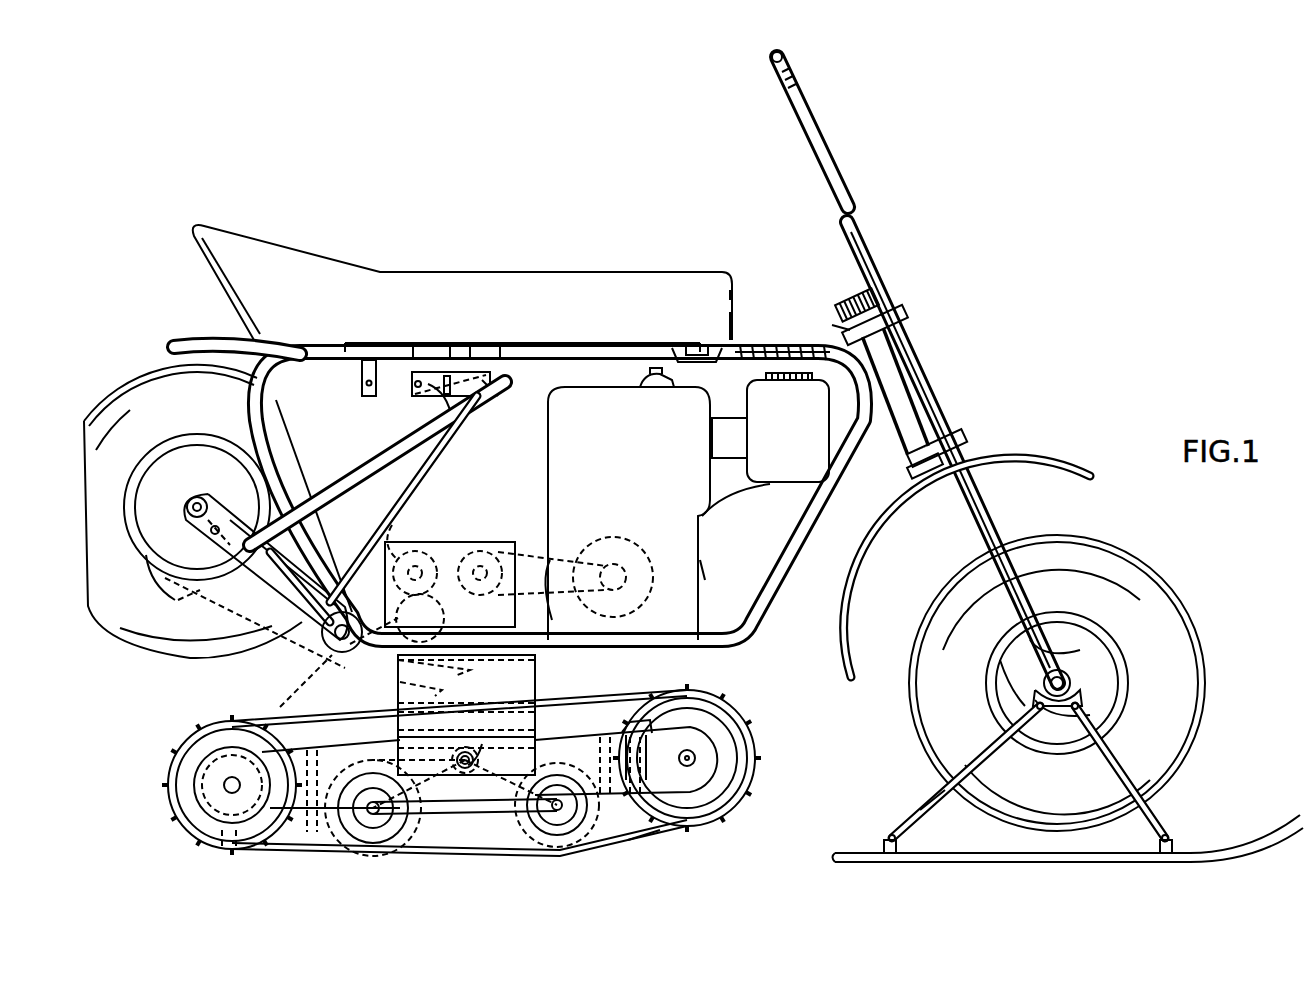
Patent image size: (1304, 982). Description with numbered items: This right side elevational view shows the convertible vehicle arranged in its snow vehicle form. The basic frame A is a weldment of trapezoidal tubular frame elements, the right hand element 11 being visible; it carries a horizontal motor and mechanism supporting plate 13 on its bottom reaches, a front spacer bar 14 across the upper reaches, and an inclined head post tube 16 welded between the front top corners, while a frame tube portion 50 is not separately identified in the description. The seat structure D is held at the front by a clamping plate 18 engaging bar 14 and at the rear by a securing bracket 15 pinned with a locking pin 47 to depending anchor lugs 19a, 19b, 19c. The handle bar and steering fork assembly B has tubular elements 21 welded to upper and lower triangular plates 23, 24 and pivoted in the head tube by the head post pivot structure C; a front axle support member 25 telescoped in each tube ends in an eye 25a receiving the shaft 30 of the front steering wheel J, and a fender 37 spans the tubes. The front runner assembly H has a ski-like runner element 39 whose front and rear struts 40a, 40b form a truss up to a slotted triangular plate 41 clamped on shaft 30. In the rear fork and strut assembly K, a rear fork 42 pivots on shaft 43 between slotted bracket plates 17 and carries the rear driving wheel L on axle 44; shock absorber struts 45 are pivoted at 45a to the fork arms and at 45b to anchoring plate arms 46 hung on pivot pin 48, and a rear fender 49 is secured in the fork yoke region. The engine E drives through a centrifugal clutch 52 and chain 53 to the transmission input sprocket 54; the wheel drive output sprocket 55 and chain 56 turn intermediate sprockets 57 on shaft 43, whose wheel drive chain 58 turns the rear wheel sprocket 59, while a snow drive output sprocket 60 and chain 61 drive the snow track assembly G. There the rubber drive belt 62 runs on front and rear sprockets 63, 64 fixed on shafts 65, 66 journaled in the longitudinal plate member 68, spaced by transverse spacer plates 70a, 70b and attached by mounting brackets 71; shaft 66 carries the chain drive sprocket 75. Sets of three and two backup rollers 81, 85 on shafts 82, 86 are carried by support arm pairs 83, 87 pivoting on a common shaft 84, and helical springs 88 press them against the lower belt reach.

The tubular frame element 11 is at (762, 614).
The motor and mechanism supporting plate 13 is at (715, 577).
The front spacer bar 14 is at (702, 345).
The rear securing bracket 15 is at (370, 341).
The head post tube 16 is at (892, 332).
The bracket plates 17 is at (339, 662).
The clamping plate 18 is at (682, 350).
The anchor lug 19a is at (378, 390).
The anchor lug 19b is at (410, 338).
The anchor lug 19c is at (488, 342).
The tubular element 21 is at (850, 203).
The upper triangular plate 23 is at (900, 303).
The lower triangular plate 24 is at (960, 441).
The front axle support member 25 is at (1054, 643).
The front wheel shaft receiving eye 25a is at (1094, 653).
The shaft 30 is at (1074, 687).
The fender 37 is at (1046, 479).
The ski-like runner element 39 is at (937, 858).
The front strut 40a is at (1120, 779).
The rear strut 40b is at (986, 755).
The triangular plate 41 is at (1084, 703).
The rear fork 42 is at (264, 590).
The shaft 43 is at (320, 642).
The axle 44 is at (204, 500).
The shock absorber strut unit 45 is at (390, 473).
The lower strut pivot 45a is at (210, 540).
The upper strut pivot 45b is at (502, 390).
The anchoring plate arm 46 is at (452, 420).
The locking pin 47 is at (484, 362).
The pivot pin 48 is at (446, 372).
The rear fender 49 is at (202, 342).
The frame down tube 50 is at (254, 432).
The centrifugal clutch 52 is at (628, 558).
The chain 53 is at (554, 564).
The transmission input sprocket 54 is at (482, 554).
The wheel drive transmission output sprocket 55 is at (418, 556).
The chain 56 is at (396, 530).
The intermediate sprockets 57 is at (302, 558).
The wheel drive chain 58 is at (188, 608).
The rear wheel sprocket 59 is at (142, 567).
The snow drive output sprocket 60 is at (440, 675).
The drive chain 61 is at (412, 702).
The flexible rubber drive belt 62 is at (632, 845).
The front sprockets 63 is at (724, 715).
The rear sprockets 64 is at (174, 775).
The front shaft 65 is at (680, 762).
The rear shaft 66 is at (228, 795).
The sub-assembly frame plate member 68 is at (632, 722).
The transverse spacer plate 70a is at (594, 734).
The transverse spacer plate 70b is at (294, 851).
The mounting bracket 71 is at (532, 686).
The chain drive sprocket 75 is at (194, 783).
The forward backup rollers 81 is at (592, 731).
The shaft 82 is at (590, 814).
The forward support arm pair 83 is at (480, 766).
The common shaft 84 is at (486, 744).
The rear backup rollers 85 is at (392, 851).
The shaft 86 is at (330, 826).
The rear support arm pair 87 is at (410, 830).
The helical spring 88 is at (492, 820).
The basic vehicle frame A is at (752, 352).
The handle bar and steering fork assembly B is at (948, 409).
The head post pivot structure C is at (836, 342).
The seat structure D is at (710, 266).
The internal combustion engine E is at (552, 445).
The endless belt snow track drive assembly G is at (747, 811).
The front runner or steering ski assembly H is at (907, 825).
The front steering wheel J is at (1198, 621).
The supporting fork and strut assembly K is at (427, 434).
The rear driving wheel L is at (134, 382).